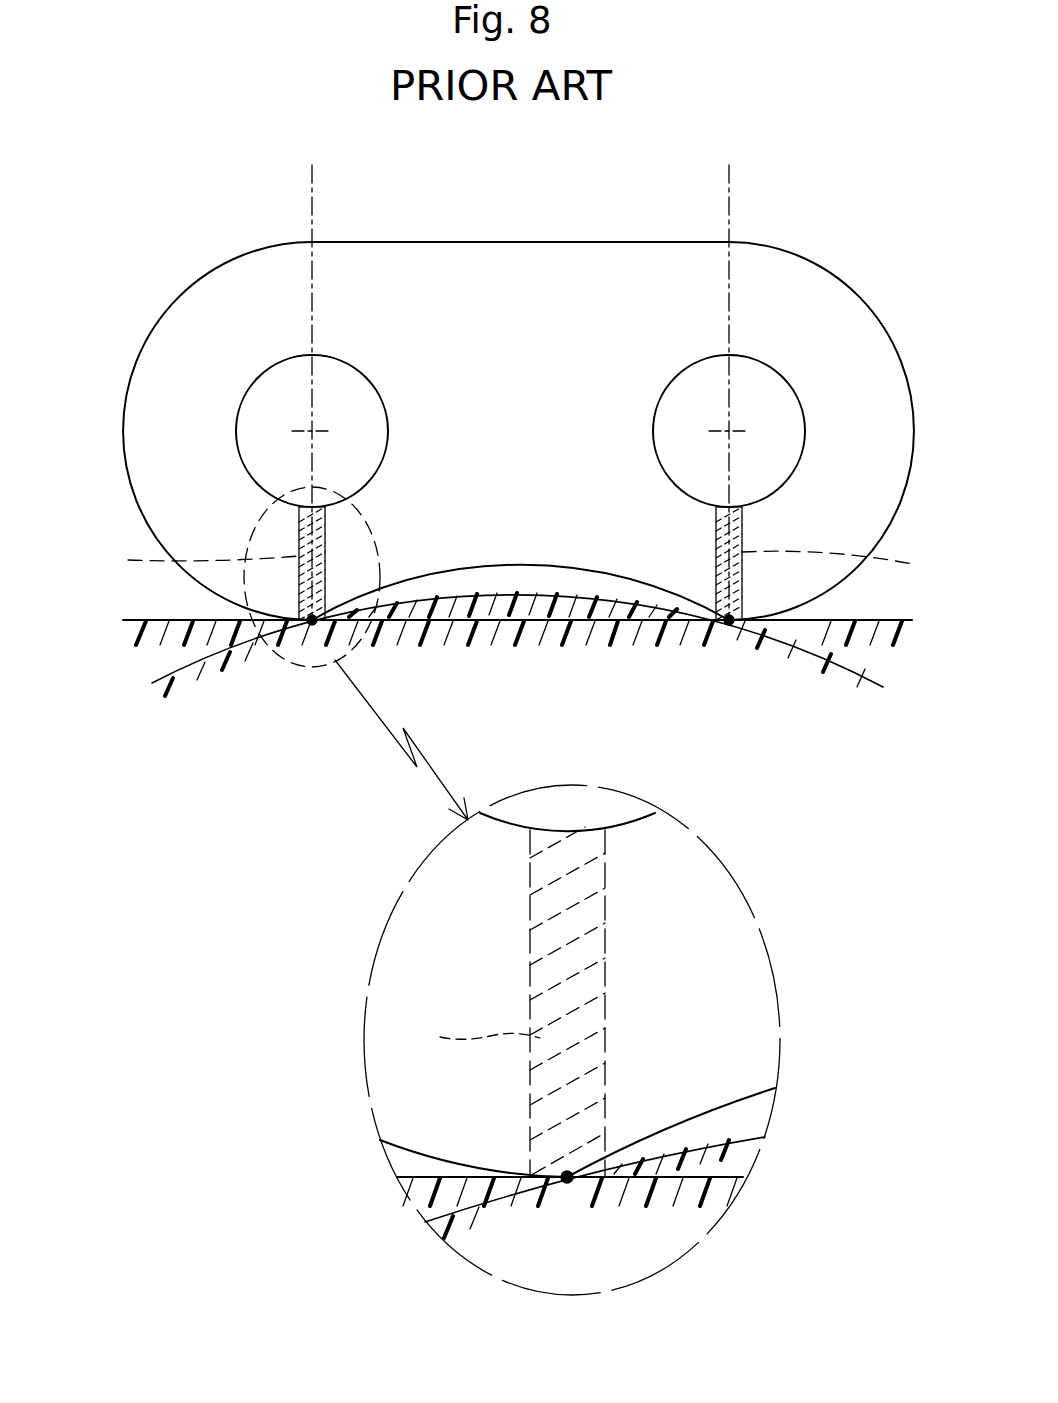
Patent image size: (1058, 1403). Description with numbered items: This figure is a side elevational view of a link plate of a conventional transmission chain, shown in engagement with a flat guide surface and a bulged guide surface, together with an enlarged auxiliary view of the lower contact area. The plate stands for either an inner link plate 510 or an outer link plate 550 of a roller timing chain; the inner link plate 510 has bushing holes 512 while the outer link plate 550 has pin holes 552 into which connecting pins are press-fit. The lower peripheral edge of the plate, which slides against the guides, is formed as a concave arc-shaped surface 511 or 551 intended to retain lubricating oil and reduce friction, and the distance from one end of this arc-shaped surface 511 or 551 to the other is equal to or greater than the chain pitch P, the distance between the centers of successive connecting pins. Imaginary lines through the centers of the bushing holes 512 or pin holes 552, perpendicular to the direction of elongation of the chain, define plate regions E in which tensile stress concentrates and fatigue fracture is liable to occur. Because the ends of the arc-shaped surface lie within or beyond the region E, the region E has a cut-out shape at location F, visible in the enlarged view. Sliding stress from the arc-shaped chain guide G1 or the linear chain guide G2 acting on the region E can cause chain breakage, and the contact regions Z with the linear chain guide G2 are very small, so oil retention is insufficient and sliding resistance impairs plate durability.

The inner link plate 510 is at (482, 709).
The outer link plate 550 is at (192, 321).
The arc-shaped surface 511 is at (543, 829).
The arc-shaped surface 551 is at (480, 581).
The bushing hole 512 is at (447, 698).
The pin hole 552 is at (279, 374).
The chain pitch P is at (711, 188).
The plate region E is at (519, 799).
The contact region Z is at (318, 640).
The arc-shaped chain guide G1 is at (222, 647).
The linear chain guide G2 is at (154, 621).
The cut out location F is at (590, 1181).